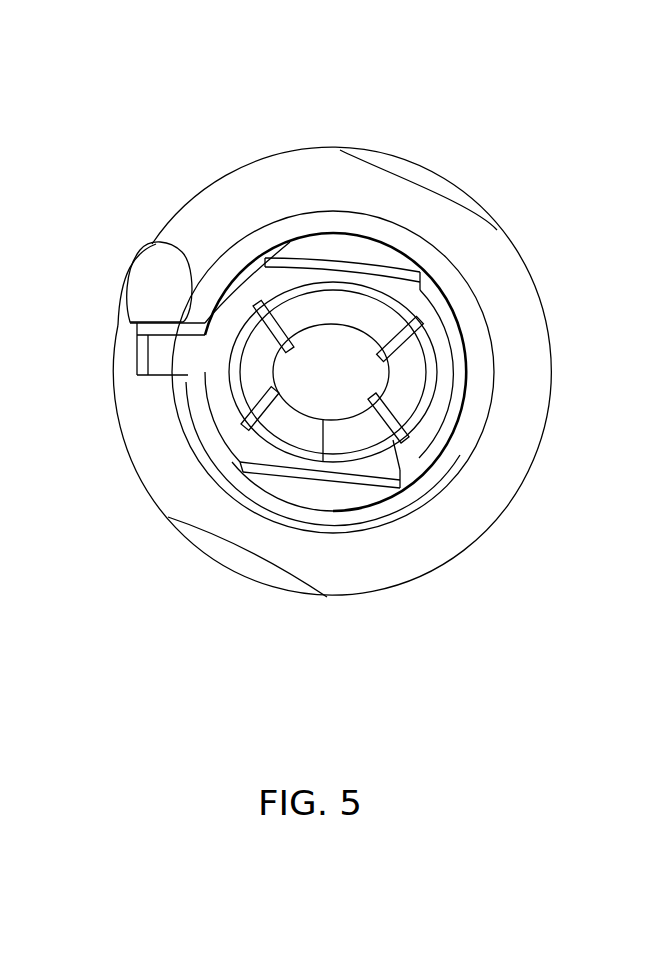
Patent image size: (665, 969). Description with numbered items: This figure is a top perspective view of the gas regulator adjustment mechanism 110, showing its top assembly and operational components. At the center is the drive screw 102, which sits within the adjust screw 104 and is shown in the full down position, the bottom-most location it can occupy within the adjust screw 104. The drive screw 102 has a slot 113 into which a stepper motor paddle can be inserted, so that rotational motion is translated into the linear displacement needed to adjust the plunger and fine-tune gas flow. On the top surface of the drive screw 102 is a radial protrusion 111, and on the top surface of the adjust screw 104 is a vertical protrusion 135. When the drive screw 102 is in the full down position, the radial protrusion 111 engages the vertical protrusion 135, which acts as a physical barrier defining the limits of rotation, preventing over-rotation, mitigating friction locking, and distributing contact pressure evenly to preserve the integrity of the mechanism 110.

The mechanism 110 is at (262, 82).
The adjust screw 104 is at (604, 177).
The vertical protrusion 135 is at (162, 283).
The radial protrusion 111 is at (162, 361).
The drive screw 102 is at (230, 438).
The slot 113 is at (370, 387).